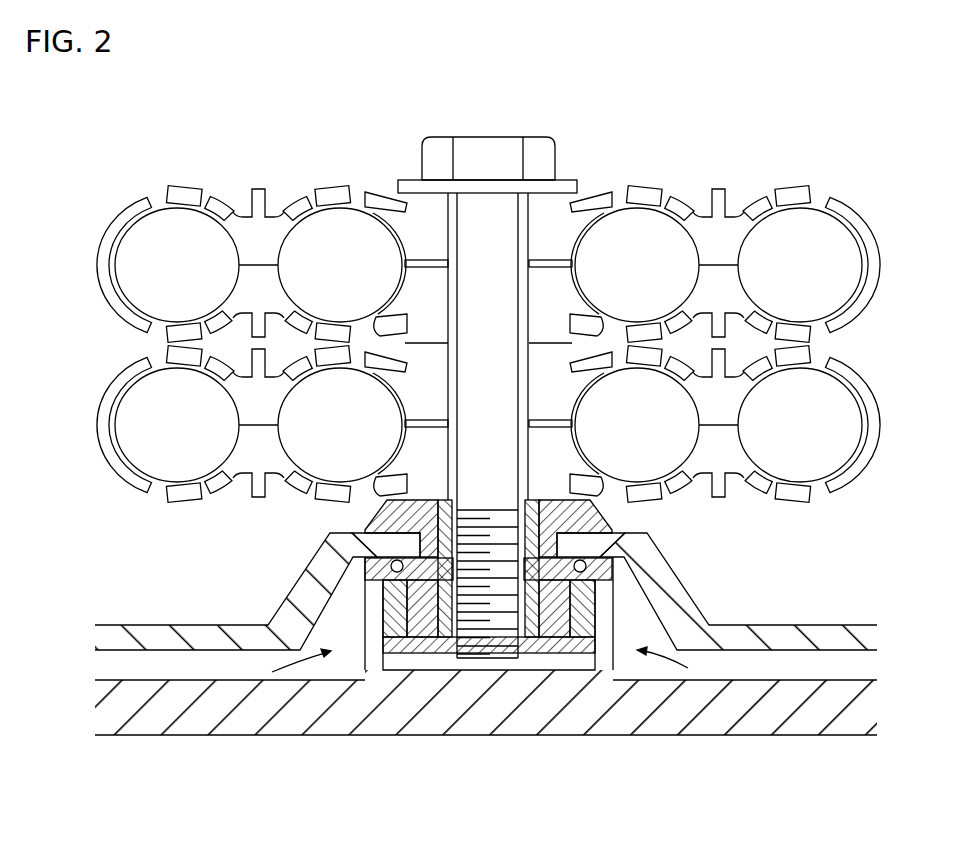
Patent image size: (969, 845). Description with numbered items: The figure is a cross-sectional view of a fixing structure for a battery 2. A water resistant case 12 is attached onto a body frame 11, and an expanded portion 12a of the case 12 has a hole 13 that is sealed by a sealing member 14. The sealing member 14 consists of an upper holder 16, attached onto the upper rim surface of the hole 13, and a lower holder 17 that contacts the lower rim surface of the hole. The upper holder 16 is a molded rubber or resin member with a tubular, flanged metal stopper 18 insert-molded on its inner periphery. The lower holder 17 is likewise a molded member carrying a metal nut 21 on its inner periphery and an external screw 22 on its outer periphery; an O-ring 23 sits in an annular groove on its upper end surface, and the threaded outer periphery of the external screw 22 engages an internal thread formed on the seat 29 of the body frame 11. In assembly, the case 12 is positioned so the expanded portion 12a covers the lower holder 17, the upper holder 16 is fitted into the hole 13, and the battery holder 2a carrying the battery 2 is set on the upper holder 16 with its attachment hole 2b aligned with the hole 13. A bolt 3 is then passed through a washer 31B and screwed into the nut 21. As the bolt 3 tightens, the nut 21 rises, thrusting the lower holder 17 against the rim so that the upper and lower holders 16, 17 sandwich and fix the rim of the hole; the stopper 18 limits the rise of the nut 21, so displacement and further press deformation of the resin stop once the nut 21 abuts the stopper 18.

The battery 2 is at (212, 194).
The battery holder 2a is at (410, 210).
The attachment hole 2b is at (528, 318).
The bolt 3 is at (505, 375).
The washer 31B is at (567, 186).
The body frame 11 is at (522, 710).
The water resistant case 12 is at (238, 626).
The expanded portion 12a is at (665, 605).
The hole 13 is at (555, 548).
The sealing member 14 is at (364, 522).
The upper holder 16 is at (612, 525).
The lower holder 17 is at (555, 650).
The stopper 18 is at (459, 504).
The nut 21 is at (448, 625).
The external screw 22 is at (587, 627).
The O-ring 23 is at (372, 560).
The seat 29 is at (613, 650).